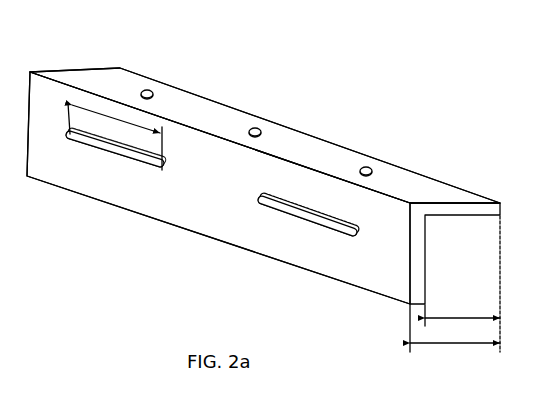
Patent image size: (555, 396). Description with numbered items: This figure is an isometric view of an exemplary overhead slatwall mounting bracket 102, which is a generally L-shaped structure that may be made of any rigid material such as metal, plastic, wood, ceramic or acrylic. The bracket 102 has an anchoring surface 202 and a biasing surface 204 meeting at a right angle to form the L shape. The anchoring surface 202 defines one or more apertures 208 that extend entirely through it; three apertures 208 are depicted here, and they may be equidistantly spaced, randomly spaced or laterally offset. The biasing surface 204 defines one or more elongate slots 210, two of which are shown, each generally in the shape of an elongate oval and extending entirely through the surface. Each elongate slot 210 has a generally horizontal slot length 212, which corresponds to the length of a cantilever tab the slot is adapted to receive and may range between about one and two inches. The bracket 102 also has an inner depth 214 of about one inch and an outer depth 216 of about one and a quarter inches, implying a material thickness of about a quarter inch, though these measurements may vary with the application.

The overhead slatwall mounting bracket 102 is at (329, 106).
The anchoring surface 202 is at (428, 184).
The biasing surface 204 is at (395, 275).
The apertures 208 is at (255, 127).
The elongate slots 210 is at (266, 203).
The slot length 212 is at (98, 113).
The inner depth 214 is at (453, 316).
The outer depth 216 is at (455, 346).